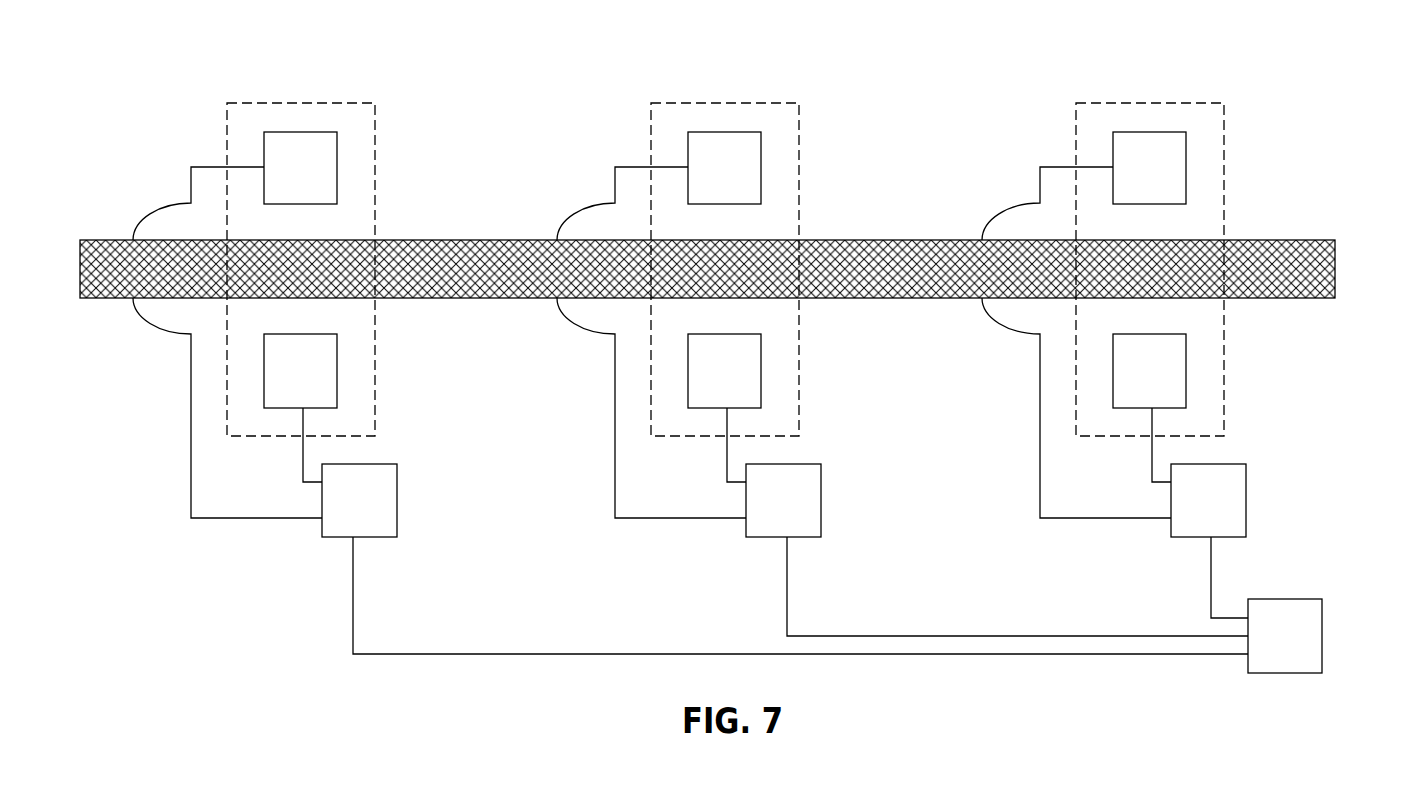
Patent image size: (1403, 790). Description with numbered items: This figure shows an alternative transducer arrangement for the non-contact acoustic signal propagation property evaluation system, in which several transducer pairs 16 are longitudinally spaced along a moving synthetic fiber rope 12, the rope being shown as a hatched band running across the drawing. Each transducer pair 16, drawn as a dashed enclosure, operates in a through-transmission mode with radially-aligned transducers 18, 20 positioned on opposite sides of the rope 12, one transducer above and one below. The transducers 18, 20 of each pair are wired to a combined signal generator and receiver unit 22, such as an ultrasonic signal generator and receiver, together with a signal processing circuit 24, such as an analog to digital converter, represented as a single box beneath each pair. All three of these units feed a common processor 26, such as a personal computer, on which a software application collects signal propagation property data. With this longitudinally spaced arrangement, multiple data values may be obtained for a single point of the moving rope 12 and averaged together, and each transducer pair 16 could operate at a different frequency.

The synthetic fiber rope 12 is at (857, 240).
The transducer pair 16 is at (348, 80).
The transducer 18 is at (337, 167).
The transducer 20 is at (337, 371).
The combined signal generator and receiver unit 22 is at (849, 500).
The signal processing circuit 24 is at (397, 490).
The processor 26 is at (1282, 599).